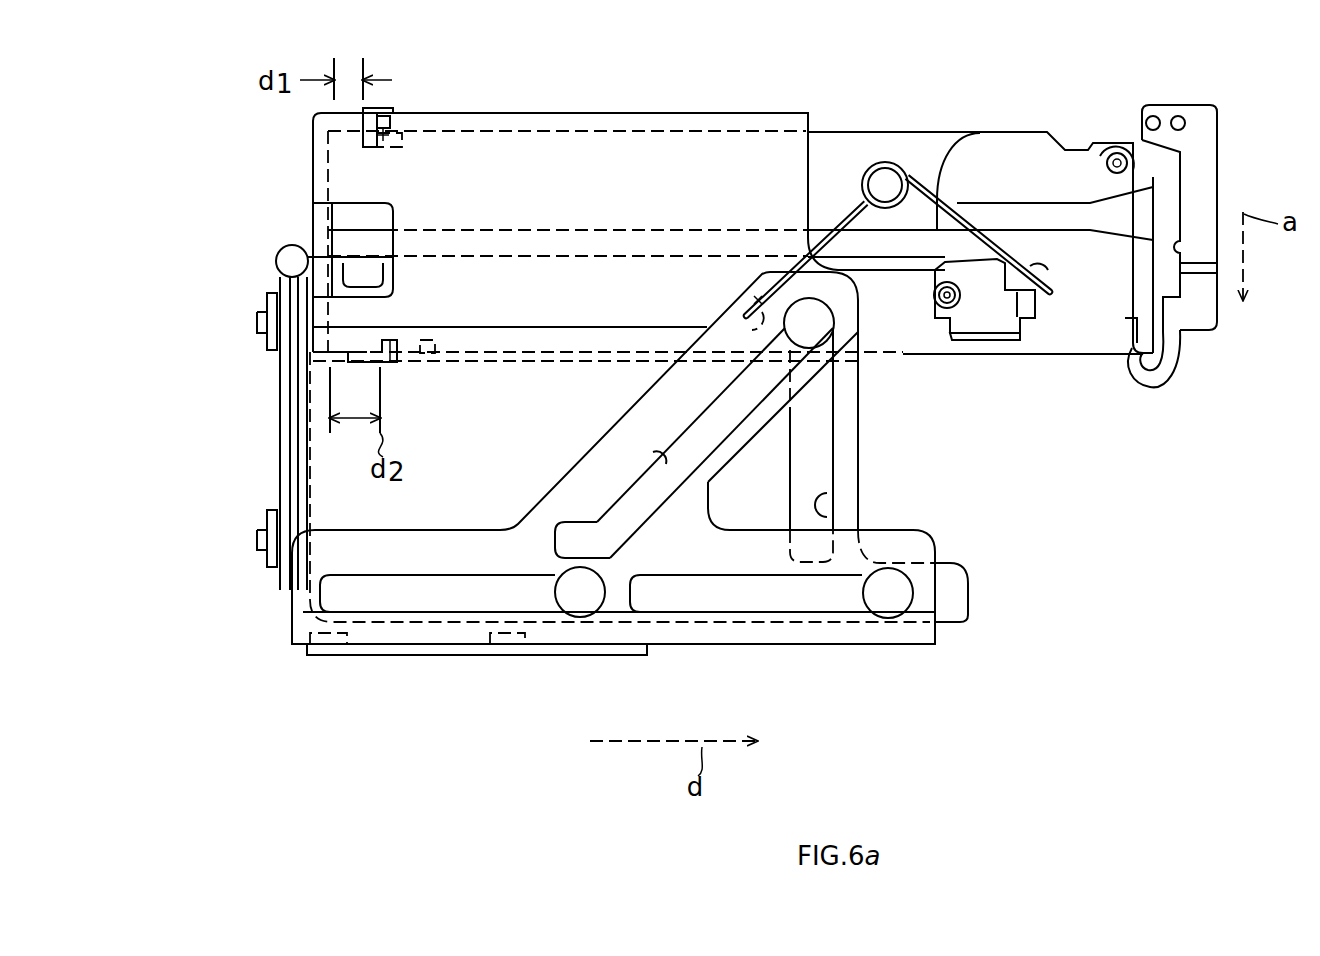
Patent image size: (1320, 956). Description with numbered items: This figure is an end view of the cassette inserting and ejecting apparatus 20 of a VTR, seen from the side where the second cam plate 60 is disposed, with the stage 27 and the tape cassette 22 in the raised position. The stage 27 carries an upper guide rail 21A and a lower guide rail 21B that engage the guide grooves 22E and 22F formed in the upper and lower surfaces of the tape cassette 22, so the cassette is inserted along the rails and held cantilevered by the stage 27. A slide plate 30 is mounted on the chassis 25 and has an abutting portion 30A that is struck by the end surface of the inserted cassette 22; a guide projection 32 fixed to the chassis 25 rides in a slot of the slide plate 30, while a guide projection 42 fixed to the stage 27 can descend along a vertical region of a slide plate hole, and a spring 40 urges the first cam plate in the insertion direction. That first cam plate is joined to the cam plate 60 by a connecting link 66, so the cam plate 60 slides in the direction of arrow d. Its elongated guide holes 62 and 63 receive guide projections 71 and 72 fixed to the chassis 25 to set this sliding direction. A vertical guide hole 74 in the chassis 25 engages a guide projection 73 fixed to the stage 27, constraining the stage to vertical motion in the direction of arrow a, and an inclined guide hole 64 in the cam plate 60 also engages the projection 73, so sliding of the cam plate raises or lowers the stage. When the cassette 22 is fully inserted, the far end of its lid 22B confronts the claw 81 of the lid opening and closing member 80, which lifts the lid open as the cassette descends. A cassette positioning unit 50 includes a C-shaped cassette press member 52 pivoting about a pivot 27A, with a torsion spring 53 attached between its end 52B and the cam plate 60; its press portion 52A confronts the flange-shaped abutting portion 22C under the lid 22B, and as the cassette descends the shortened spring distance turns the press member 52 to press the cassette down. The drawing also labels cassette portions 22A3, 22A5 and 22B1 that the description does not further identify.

The cassette inserting and ejecting apparatus 20 is at (295, 34).
The upper guide rail 21A is at (405, 108).
The lower guide rail 21B is at (396, 363).
The tape cassette 22 is at (845, 132).
The frame upper edge portion 22A3 is at (875, 140).
The frame side wall portion 22A5 is at (313, 160).
The lid 22B is at (1181, 300).
The frame cam portion 22B1 is at (1030, 155).
The abutting portion 22C is at (973, 338).
The guide groove 22E is at (383, 148).
The guide groove 22F is at (440, 325).
The chassis 25 is at (860, 467).
The stage 27 is at (548, 113).
The pivot 27A is at (945, 296).
The slide plate 30 is at (282, 447).
The abutting portion 30A is at (370, 277).
The guide projection 32 is at (264, 526).
The spring 40 is at (290, 245).
The guide projection 42 is at (266, 300).
The cassette positioning unit 50 is at (1091, 323).
The cassette press member 52 is at (1000, 300).
The press portion 52A is at (1003, 333).
The end of cassette press member 52B is at (1035, 267).
The torsion spring 53 is at (907, 170).
The second cam plate 60 is at (843, 648).
The elongated guide hole 62 is at (762, 600).
The elongated guide hole 63 is at (428, 600).
The inclined guide hole 64 is at (650, 466).
The connecting link 66 is at (565, 652).
The guide projection 71 is at (890, 597).
The guide projection 72 is at (590, 598).
The guide projection 73 is at (806, 322).
The vertical guide hole 74 is at (838, 505).
The lid opening and closing member 80 is at (1233, 152).
The claw 81 is at (1177, 360).